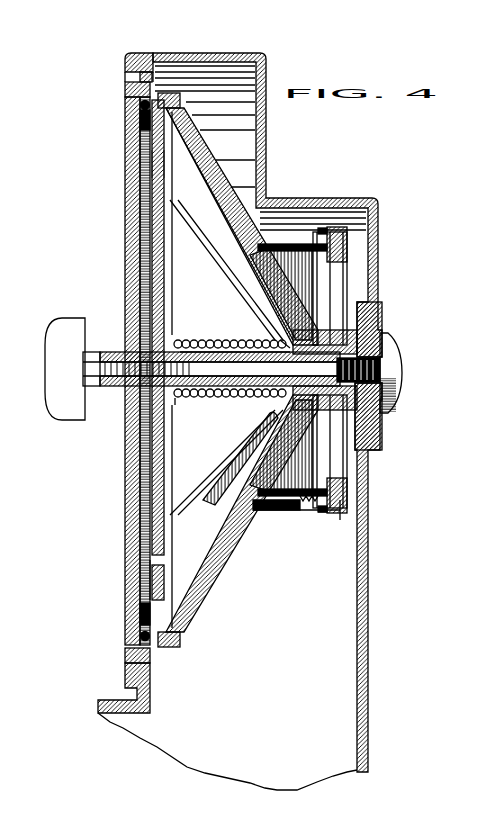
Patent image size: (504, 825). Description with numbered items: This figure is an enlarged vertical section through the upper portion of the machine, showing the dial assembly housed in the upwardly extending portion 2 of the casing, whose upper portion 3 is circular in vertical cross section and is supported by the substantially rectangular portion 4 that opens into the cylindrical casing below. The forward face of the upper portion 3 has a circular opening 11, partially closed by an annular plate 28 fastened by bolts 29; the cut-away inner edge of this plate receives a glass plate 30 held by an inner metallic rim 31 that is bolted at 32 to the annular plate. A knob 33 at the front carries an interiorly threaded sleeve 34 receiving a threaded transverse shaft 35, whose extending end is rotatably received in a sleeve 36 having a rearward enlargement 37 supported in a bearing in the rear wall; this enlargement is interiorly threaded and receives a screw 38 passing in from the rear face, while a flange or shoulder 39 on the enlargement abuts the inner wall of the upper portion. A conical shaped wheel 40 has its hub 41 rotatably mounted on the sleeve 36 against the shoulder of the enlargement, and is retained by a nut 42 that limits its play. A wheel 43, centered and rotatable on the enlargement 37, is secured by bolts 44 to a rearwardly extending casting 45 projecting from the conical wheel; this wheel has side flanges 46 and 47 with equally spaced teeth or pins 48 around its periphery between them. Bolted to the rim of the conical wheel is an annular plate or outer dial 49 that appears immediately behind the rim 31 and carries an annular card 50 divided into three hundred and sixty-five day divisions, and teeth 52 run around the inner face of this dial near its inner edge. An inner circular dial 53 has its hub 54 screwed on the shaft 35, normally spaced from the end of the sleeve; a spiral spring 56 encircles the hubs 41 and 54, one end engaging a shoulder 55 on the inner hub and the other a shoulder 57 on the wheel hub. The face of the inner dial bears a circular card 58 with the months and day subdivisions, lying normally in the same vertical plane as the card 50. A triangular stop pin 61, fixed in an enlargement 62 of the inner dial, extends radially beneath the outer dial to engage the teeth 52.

The upwardly extending portion 2 is at (343, 655).
The upper portion 3 is at (378, 243).
The rectangular portion 4 is at (352, 750).
The circular opening 11 is at (135, 97).
The annular plate 28 is at (125, 60).
The bolts 29 is at (125, 80).
The glass plate 30 is at (125, 150).
The inner metallic rim 31 is at (125, 128).
The bolts 32 is at (125, 108).
The knob 33 is at (45, 372).
The interiorly threaded sleeve 34 is at (83, 357).
The threaded transverse shaft 35 is at (115, 383).
The sleeve 36 is at (267, 400).
The rearward enlargement 37 is at (288, 505).
The screw 38 is at (400, 367).
The flange or extending shoulder 39 is at (380, 310).
The conical shaped wheel 40 is at (222, 550).
The hub 41 is at (218, 396).
The nut 42 is at (203, 342).
The wheel 43 is at (337, 275).
The bolts 44 is at (350, 242).
The rearwardly extending casting 45 is at (300, 510).
The side flange 46 is at (322, 517).
The side flange 47 is at (340, 520).
The teeth or pins 48 is at (337, 230).
The annular plate or outer dial 49 is at (120, 597).
The annular card 50 is at (152, 573).
The teeth 52 is at (168, 158).
The inner circular dial 53 is at (153, 480).
The hub 54 is at (175, 403).
The shoulder 55 is at (175, 337).
The spiral spring 56 is at (213, 342).
The shoulder 57 is at (277, 348).
The circular card 58 is at (155, 232).
The stop pin 61 is at (177, 170).
The enlargement 62 is at (171, 207).